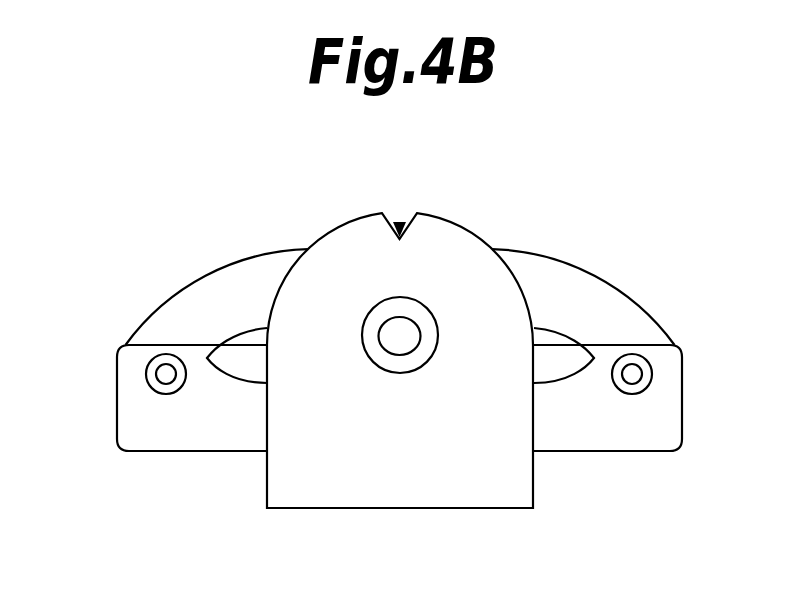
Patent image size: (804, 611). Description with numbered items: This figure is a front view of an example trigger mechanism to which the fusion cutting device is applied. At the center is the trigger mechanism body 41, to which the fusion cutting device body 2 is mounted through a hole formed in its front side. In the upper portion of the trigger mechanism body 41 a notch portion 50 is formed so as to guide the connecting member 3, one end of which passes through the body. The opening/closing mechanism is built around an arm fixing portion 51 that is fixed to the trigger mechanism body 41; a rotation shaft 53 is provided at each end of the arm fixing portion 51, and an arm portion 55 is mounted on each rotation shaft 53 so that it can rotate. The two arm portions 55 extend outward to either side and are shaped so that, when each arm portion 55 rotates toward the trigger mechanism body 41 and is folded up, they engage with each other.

The fusion cutting device body 2 is at (418, 302).
The connecting member 3 is at (396, 220).
The trigger mechanism body 41 is at (497, 509).
The notch portion 50 is at (418, 216).
The arm fixing portion 51 is at (647, 452).
The rotation shaft 53 is at (146, 373).
The arm portion 55 is at (207, 280).